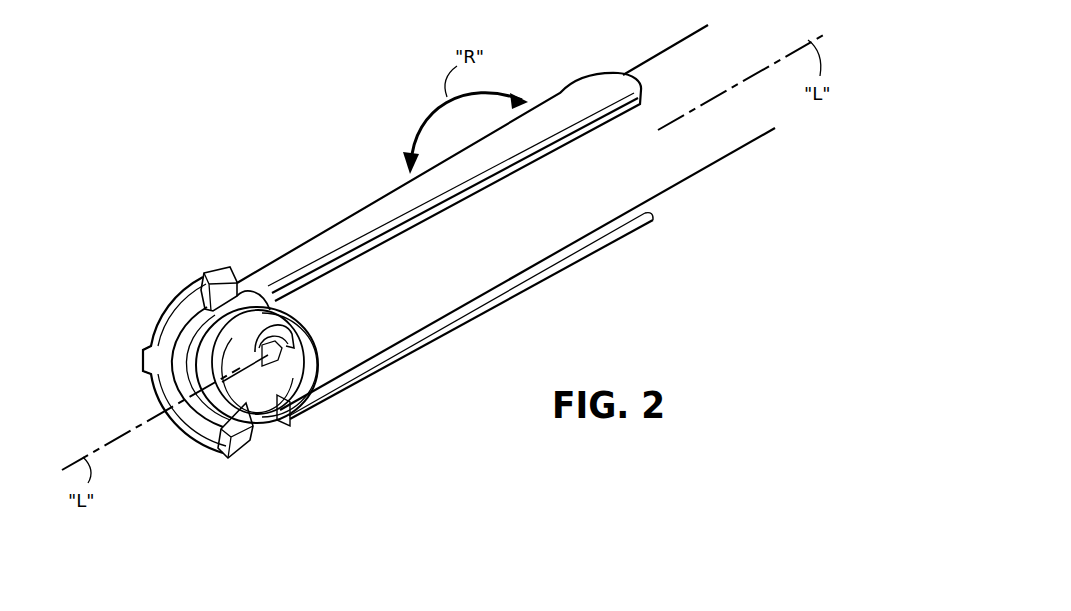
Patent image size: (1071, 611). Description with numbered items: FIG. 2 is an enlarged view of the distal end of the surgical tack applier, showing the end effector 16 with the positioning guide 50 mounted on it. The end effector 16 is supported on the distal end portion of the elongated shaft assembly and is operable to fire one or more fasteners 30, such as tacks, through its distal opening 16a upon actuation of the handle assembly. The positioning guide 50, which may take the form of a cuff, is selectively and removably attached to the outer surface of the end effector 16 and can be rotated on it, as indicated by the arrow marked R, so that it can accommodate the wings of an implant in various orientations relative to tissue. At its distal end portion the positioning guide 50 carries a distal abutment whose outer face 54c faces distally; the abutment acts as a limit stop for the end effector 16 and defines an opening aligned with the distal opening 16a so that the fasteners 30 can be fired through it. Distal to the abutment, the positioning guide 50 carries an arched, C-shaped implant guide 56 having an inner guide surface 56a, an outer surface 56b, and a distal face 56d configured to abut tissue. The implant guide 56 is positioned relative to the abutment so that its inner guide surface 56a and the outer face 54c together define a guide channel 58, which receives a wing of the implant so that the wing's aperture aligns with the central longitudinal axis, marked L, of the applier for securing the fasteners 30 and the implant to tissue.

The end effector 16 is at (558, 217).
The distal opening 16a is at (170, 302).
The fasteners 30 is at (277, 352).
The positioning guide 50 is at (323, 230).
The outer face 54c is at (255, 302).
The implant guide 56 is at (187, 423).
The inner guide surface 56a is at (187, 373).
The outer surface 56b is at (246, 330).
The distal face 56d is at (167, 332).
The guide channel 58 is at (254, 423).